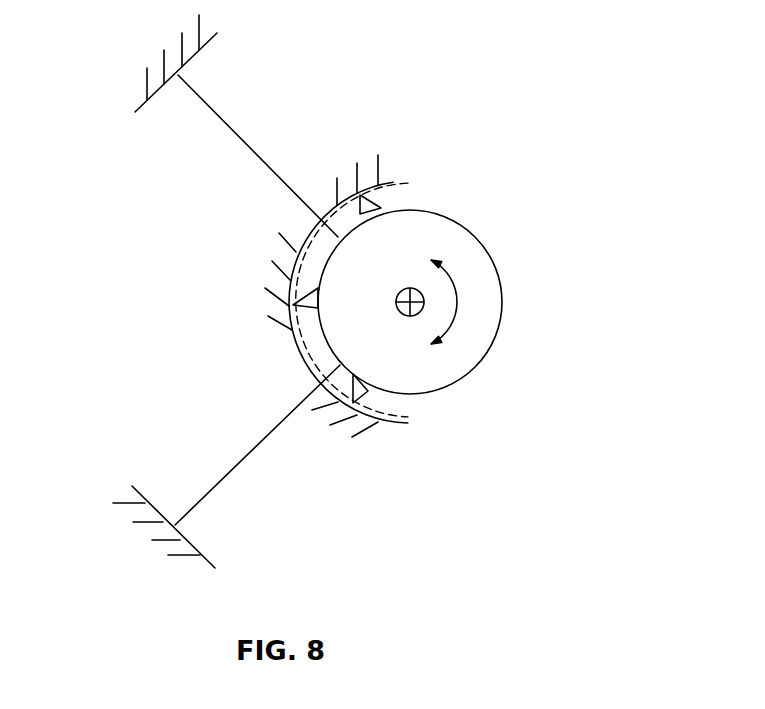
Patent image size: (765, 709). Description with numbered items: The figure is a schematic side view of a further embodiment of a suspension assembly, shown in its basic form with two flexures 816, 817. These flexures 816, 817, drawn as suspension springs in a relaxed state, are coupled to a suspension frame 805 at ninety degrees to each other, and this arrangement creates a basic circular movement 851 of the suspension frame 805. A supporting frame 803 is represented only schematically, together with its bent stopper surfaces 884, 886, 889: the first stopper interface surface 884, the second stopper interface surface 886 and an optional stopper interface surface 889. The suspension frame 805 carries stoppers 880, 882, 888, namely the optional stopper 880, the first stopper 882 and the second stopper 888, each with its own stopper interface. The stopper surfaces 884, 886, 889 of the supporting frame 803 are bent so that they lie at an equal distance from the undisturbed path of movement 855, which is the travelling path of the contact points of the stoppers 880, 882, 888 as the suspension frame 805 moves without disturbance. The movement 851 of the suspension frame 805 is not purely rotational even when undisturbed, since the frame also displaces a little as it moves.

The supporting frame 803 is at (137, 113).
The first flexure 816 is at (213, 107).
The second flexure 817 is at (200, 503).
The suspension frame 805 is at (458, 243).
The direction of suspension frame movement 851 is at (458, 302).
The undisturbed path of movement 855 is at (405, 183).
The optional stopper 880 is at (293, 305).
The first stopper 882 is at (381, 207).
The first stopper interface surface 884 is at (346, 187).
The second stopper interface surface 886 is at (334, 414).
The second stopper 888 is at (408, 423).
The optional stopper interface surface 889 is at (280, 250).